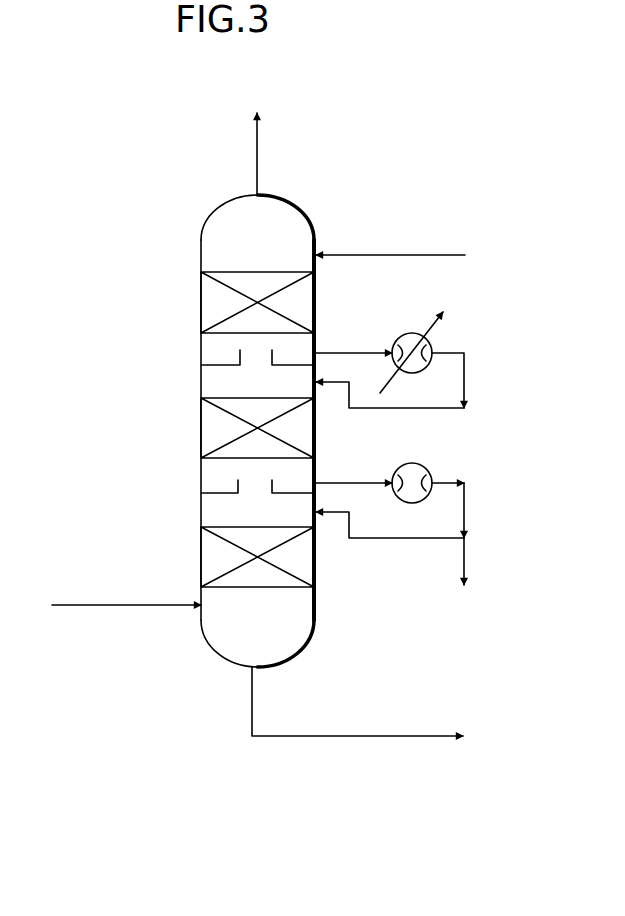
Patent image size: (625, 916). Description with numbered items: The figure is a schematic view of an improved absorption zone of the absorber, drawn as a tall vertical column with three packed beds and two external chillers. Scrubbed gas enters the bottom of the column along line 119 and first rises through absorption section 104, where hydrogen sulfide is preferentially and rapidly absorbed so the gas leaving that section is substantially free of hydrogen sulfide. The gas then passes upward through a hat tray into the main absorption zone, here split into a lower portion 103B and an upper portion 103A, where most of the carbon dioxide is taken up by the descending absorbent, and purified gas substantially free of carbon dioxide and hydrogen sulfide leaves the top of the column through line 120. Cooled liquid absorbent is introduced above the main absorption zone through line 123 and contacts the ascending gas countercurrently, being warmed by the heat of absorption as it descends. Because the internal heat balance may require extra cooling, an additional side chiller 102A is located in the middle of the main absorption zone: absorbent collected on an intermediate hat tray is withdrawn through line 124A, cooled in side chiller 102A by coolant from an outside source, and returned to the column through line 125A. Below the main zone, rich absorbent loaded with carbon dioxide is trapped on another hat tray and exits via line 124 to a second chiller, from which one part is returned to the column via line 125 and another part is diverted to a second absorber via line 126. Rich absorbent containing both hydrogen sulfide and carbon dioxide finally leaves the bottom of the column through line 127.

The side chiller 102A is at (433, 343).
The upper portion of main absorption zone 103A is at (208, 295).
The lower portion of main absorption zone 103B is at (208, 425).
The absorption section 104 is at (208, 550).
The line 119 is at (102, 605).
The line 120 is at (257, 147).
The line 123 is at (397, 255).
The line 124 is at (355, 470).
The line 124A is at (355, 352).
The line 125 is at (373, 538).
The line 125A is at (403, 408).
The line 126 is at (464, 557).
The line 127 is at (370, 736).